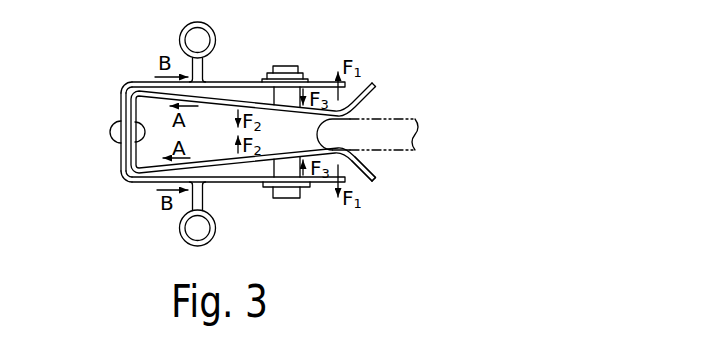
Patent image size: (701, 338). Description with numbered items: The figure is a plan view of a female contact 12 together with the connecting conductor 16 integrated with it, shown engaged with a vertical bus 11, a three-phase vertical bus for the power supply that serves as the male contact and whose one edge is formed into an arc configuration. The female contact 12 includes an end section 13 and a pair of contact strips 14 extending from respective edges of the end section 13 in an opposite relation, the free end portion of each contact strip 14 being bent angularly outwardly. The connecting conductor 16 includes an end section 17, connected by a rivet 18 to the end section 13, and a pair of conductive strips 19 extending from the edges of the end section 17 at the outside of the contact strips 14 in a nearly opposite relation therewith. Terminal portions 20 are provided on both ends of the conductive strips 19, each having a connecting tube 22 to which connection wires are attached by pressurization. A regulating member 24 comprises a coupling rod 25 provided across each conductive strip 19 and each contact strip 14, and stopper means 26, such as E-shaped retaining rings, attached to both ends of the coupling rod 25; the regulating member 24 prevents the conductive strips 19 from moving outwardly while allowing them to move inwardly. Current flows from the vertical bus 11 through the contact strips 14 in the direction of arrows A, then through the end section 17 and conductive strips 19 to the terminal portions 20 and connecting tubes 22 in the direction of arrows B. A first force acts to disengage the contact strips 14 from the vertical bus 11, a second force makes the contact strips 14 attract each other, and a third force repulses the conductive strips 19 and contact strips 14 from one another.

The vertical bus 11 is at (412, 121).
The female contact 12 is at (380, 176).
The end section 13 is at (121, 161).
The contact strips 14 is at (232, 99).
The connecting conductor 16 is at (129, 188).
The end section 17 is at (118, 101).
The rivet 18 is at (108, 133).
The conductive strips 19 is at (138, 81).
The terminal portions 20 is at (207, 79).
The connecting tube 22 is at (207, 26).
The regulating member 24 is at (268, 101).
The coupling rod 25 is at (285, 174).
The stopper means 26 is at (306, 78).